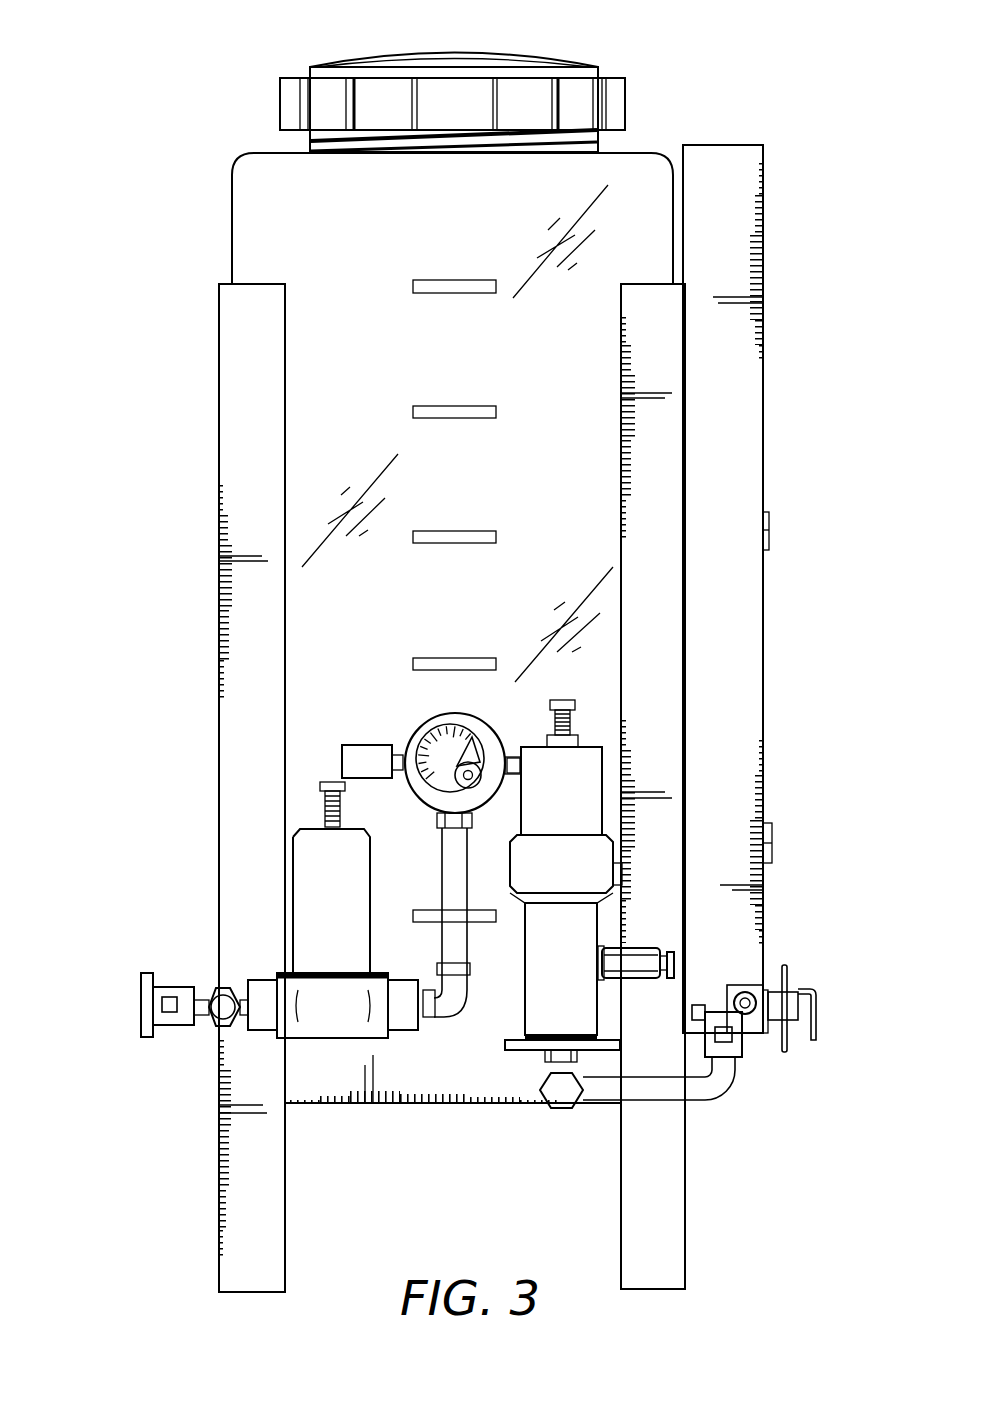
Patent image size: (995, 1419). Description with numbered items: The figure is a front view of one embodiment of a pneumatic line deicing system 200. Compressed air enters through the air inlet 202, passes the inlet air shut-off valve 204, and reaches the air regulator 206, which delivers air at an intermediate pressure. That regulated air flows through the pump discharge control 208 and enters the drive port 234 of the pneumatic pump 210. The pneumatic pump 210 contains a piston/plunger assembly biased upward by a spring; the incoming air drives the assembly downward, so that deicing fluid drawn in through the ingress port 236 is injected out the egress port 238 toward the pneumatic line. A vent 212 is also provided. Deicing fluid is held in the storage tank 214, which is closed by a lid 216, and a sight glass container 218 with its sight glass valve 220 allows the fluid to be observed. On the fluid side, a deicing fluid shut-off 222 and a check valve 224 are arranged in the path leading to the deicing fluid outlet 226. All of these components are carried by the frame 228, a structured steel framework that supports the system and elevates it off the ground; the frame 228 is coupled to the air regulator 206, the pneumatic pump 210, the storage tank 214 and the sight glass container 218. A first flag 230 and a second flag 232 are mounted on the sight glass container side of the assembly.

The pneumatic line deicing system 200 is at (172, 33).
The air inlet 202 is at (210, 1022).
The inlet air shut-off valve 204 is at (141, 1003).
The air regulator 206 is at (302, 944).
The pump discharge control 208 is at (428, 718).
The pneumatic pump 210 is at (541, 881).
The vent 212 is at (342, 761).
The storage tank 214 is at (278, 152).
The lid 216 is at (470, 52).
The sight glass container 218 is at (763, 407).
The sight glass valve 220 is at (787, 1036).
The deicing fluid shut-off 222 is at (705, 1005).
The check valve 224 is at (633, 979).
The deicing fluid outlet 226 is at (675, 961).
The frame 228 is at (245, 372).
The first flag 230 is at (770, 531).
The second flag 232 is at (775, 843).
The drive port 234 is at (516, 756).
The ingress port 236 is at (530, 1046).
The egress port 238 is at (605, 955).